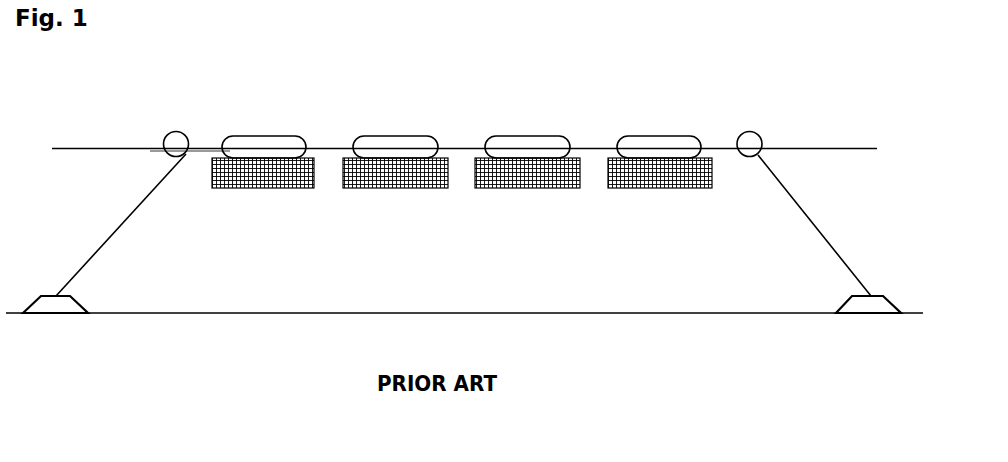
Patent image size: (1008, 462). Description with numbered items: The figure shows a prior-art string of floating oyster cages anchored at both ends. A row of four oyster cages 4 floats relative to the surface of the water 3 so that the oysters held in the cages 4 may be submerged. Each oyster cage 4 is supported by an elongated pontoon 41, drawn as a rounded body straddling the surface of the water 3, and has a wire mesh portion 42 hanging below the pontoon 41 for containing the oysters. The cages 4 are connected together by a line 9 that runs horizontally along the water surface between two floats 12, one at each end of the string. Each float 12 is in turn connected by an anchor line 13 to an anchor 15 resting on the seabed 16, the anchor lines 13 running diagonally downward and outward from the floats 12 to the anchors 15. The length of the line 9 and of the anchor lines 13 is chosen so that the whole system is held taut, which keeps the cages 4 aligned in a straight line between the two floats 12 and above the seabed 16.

The surface of the water 3 is at (130, 149).
The oyster cage 4 is at (234, 112).
The line 9 is at (202, 152).
The float 12 is at (165, 136).
The anchor line 13 is at (128, 217).
The anchor 15 is at (52, 294).
The seabed 16 is at (374, 312).
The elongated pontoon 41 is at (270, 136).
The wire mesh portion 42 is at (250, 188).